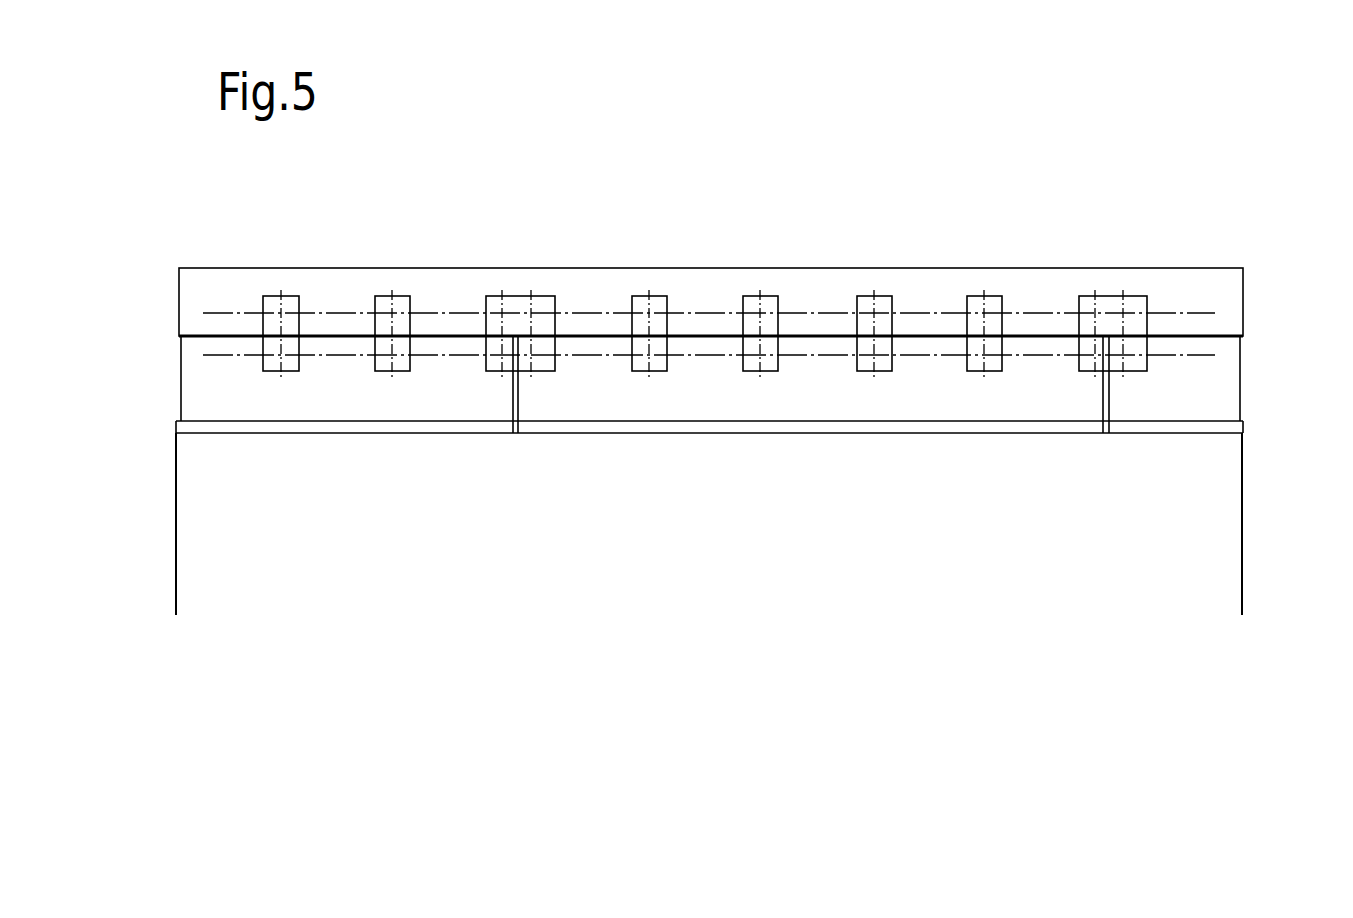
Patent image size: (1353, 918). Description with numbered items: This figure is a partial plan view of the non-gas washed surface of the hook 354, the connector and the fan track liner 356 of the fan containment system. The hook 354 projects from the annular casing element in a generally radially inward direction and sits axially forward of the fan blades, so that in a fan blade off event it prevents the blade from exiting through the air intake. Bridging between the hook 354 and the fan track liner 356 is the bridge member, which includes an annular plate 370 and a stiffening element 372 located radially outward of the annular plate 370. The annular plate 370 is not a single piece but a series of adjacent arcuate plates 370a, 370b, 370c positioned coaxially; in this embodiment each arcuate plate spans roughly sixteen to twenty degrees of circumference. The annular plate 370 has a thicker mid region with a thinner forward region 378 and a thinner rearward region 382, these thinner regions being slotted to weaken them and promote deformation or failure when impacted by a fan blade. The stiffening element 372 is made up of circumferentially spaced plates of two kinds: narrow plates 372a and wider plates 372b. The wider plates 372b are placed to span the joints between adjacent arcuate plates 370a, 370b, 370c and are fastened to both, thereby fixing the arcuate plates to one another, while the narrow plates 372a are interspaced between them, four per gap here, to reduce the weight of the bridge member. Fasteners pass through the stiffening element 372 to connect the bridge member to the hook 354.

The hook 354 is at (342, 297).
The annular plate 370 is at (180, 392).
The stiffening element 372 is at (395, 360).
The narrow plate 372a is at (648, 305).
The wider plate 372b is at (515, 295).
The forward region 378 is at (1222, 353).
The rearward region 382 is at (1217, 412).
The arcuate plate 370a is at (437, 434).
The arcuate plate 370b is at (862, 434).
The arcuate plate 370c is at (1155, 433).
The fan track liner 356 is at (668, 562).